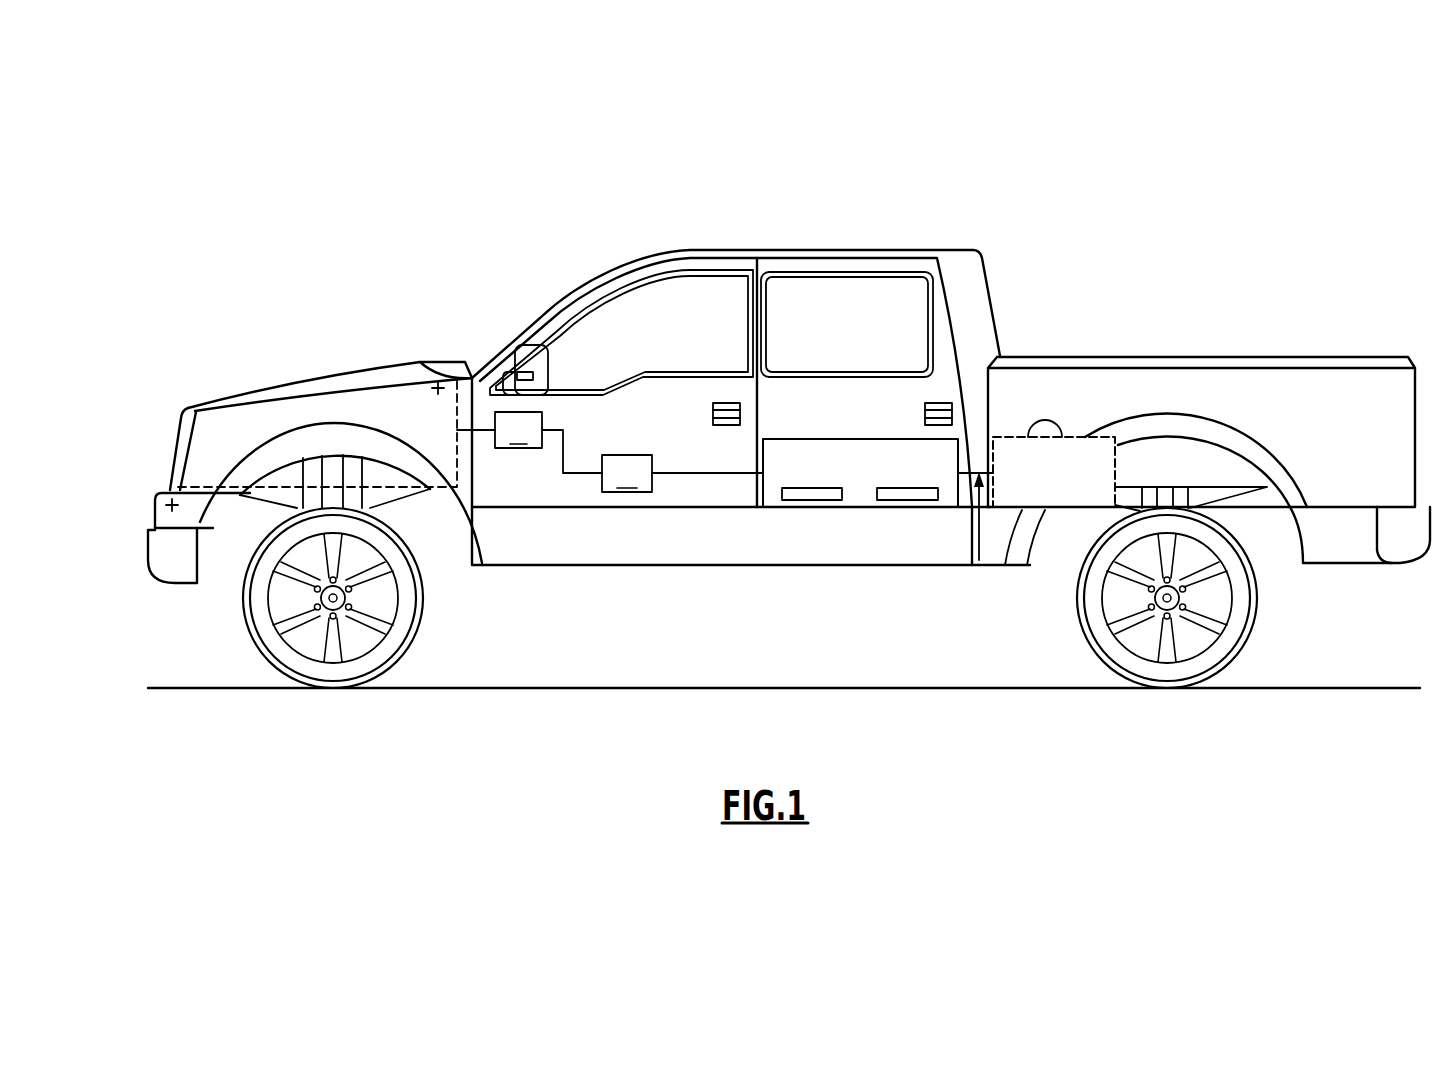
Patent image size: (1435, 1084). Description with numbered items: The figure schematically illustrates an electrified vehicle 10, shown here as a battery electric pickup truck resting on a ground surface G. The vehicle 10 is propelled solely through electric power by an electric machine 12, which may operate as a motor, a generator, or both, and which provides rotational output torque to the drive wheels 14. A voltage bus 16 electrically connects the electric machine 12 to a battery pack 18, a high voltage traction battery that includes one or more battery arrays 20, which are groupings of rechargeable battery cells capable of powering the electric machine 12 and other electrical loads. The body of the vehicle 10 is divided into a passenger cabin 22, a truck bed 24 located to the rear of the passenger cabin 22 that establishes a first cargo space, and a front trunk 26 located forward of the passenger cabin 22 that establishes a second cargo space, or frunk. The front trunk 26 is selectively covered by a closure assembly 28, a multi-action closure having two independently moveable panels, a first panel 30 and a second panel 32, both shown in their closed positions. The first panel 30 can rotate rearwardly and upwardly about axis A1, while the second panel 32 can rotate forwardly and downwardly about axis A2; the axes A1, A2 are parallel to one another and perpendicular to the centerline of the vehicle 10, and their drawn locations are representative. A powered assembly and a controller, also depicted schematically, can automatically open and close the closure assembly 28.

The electrified vehicle 10 is at (755, 460).
The electric machine 12 is at (1060, 436).
The drive wheels 14 is at (318, 675).
The voltage bus 16 is at (979, 560).
The battery pack 18 is at (860, 470).
The battery arrays 20 is at (812, 499).
The passenger cabin 22 is at (653, 305).
The truck bed 24 is at (1185, 343).
The front trunk 26 is at (440, 432).
The closure assembly 28 is at (275, 355).
The first panel 30 is at (345, 363).
The second panel 32 is at (158, 468).
The axis A1 is at (436, 389).
The axis A2 is at (168, 505).
The ground surface G is at (515, 673).